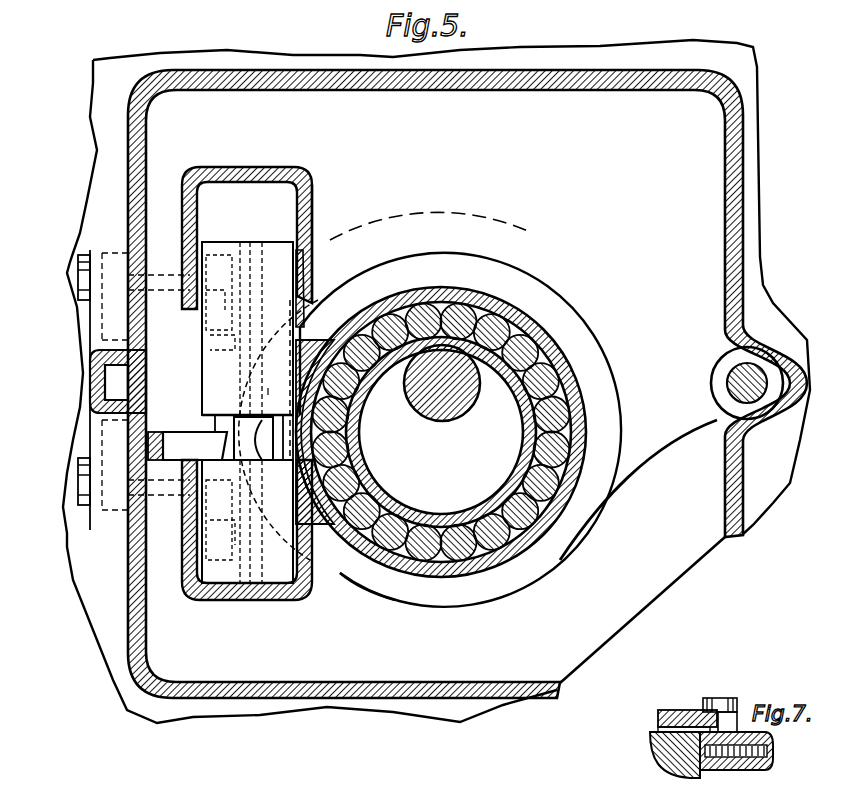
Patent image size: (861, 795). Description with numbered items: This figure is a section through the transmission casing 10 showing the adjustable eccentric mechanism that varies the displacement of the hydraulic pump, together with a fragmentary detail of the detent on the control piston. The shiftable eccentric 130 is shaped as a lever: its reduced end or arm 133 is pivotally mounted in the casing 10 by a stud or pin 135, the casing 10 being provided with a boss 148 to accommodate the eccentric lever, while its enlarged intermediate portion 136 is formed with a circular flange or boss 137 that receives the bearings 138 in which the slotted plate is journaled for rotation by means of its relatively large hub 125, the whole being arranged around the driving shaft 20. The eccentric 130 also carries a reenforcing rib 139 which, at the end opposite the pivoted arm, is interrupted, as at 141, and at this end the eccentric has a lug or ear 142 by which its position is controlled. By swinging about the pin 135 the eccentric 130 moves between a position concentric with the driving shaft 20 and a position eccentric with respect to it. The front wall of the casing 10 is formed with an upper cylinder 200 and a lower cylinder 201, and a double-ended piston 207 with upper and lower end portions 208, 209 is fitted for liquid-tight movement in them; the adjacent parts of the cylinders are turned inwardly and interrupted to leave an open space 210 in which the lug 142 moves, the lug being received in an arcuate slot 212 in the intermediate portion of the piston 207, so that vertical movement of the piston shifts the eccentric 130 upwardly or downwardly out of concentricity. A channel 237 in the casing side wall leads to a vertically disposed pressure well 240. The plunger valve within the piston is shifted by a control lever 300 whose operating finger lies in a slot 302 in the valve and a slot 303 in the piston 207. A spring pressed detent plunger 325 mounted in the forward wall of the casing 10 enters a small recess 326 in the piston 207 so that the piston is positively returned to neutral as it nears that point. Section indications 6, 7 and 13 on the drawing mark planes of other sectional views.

In FIG. 5, the casing 10 is at (735, 168).
In FIG. 5, the boss 148 is at (786, 340).
In FIG. 5, the upper cylinder 200 is at (252, 167).
In FIG. 5, the double-ended piston 207 is at (272, 232).
In FIG. 7, the double-ended piston 207 is at (668, 776).
In FIG. 5, the upper end portion 208 is at (312, 240).
In FIG. 5, the open space 210 is at (190, 327).
In FIG. 5, the lower cylinder 201 is at (260, 602).
In FIG. 5, the lower end portion 209 is at (270, 602).
In FIG. 5, the lug or ear 142 is at (290, 462).
In FIG. 5, the interruption 141 is at (314, 560).
In FIG. 5, the control lever 300 is at (212, 432).
In FIG. 5, the slot 302 is at (190, 408).
In FIG. 5, the arcuate slot 212 is at (253, 429).
In FIG. 5, the slot 303 is at (274, 390).
In FIG. 5, the channel 237 is at (105, 413).
In FIG. 5, the auxiliary pressure chamber or pressure well 240 is at (100, 326).
In FIG. 5, the section line 13 is at (72, 377).
In FIG. 5, the section line 6 is at (110, 484).
In FIG. 5, the section line 7 is at (376, 395).
In FIG. 5, the intermediate portion 136 is at (452, 262).
In FIG. 5, the reenforcing rib 139 is at (432, 238).
In FIG. 5, the shiftable eccentric 130 is at (507, 210).
In FIG. 5, the circular flange or boss 137 is at (480, 300).
In FIG. 5, the bearings 138 is at (560, 340).
In FIG. 5, the hub 125 is at (515, 470).
In FIG. 5, the driving shaft 20 is at (452, 408).
In FIG. 5, the recess 326 is at (308, 296).
In FIG. 7, the recess 326 is at (650, 760).
In FIG. 5, the spring pressed detent plunger 325 is at (330, 320).
In FIG. 7, the spring pressed detent plunger 325 is at (745, 770).
In FIG. 5, the reduced end or arm 133 is at (663, 372).
In FIG. 5, the stud or pin 135 is at (740, 372).